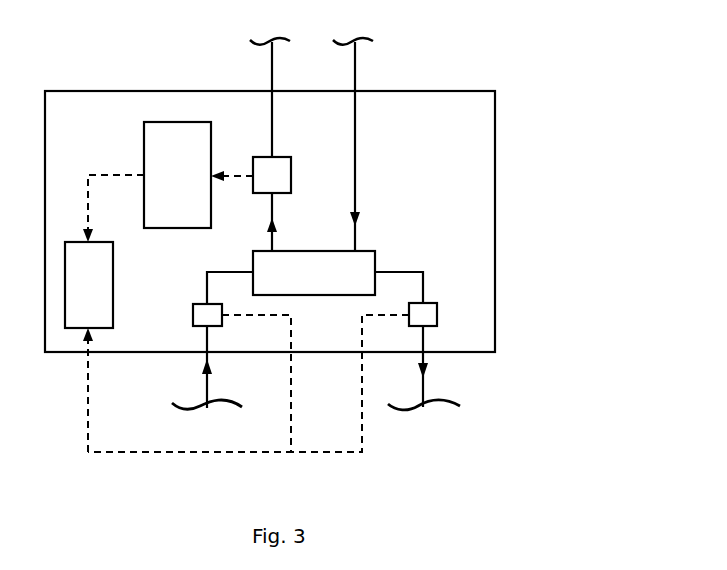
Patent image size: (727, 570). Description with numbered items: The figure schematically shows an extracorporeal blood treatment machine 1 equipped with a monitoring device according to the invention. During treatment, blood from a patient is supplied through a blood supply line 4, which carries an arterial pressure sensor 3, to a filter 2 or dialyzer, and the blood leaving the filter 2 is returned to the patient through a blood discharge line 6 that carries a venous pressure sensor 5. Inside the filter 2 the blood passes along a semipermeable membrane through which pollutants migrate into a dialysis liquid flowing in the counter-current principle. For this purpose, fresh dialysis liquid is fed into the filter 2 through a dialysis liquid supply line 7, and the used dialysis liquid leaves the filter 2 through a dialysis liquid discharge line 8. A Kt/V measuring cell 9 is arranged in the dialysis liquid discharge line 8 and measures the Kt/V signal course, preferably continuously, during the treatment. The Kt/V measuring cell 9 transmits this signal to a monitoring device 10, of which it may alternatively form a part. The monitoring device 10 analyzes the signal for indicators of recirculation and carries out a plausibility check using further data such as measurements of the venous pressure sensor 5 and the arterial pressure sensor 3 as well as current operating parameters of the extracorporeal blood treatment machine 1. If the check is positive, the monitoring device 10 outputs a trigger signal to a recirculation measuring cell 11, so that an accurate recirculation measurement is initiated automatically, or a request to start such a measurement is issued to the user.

The extracorporeal blood treatment machine 1 is at (531, 202).
The filter 2 is at (315, 277).
The arterial pressure sensor 3 is at (192, 318).
The blood supply line 4 is at (207, 382).
The venous pressure sensor 5 is at (437, 316).
The blood discharge line 6 is at (423, 383).
The dialysis liquid supply line 7 is at (358, 105).
The dialysis liquid discharge line 8 is at (270, 112).
The Kt/V measuring cell 9 is at (251, 175).
The monitoring device 10 is at (177, 175).
The recirculation measuring cell 11 is at (104, 313).